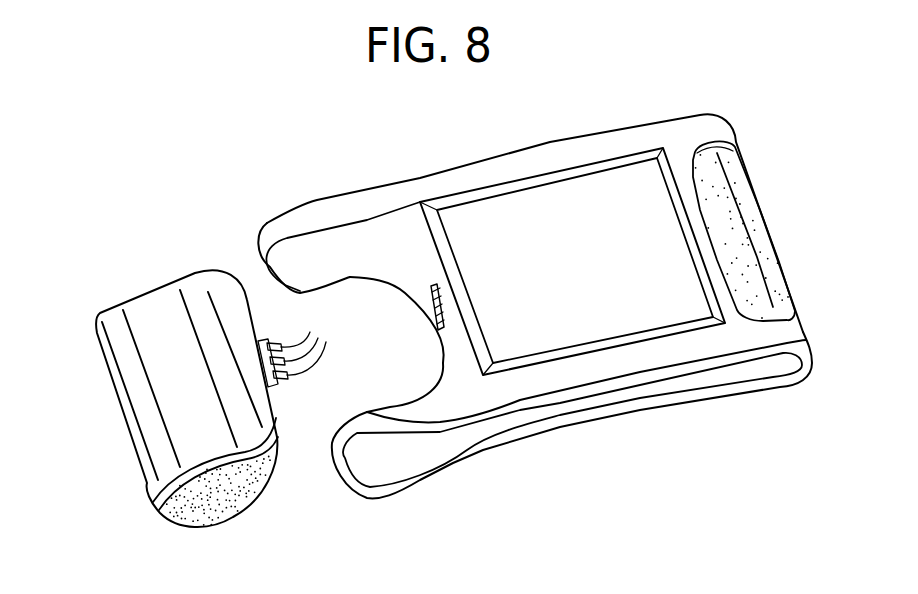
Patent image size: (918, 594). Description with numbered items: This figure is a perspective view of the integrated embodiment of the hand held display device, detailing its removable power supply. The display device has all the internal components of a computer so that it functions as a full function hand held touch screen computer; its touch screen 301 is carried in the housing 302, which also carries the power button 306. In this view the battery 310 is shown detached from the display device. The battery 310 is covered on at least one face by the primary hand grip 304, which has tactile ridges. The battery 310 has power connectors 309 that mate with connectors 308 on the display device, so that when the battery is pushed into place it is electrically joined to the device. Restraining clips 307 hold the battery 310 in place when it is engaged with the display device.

The touch screen 301 is at (612, 190).
The housing 302 is at (707, 128).
The primary hand grip 304 is at (145, 312).
The power button 306 is at (375, 471).
The restraining clips 307 is at (353, 253).
The connectors 308 is at (432, 323).
The power connectors 309 is at (270, 344).
The battery 310 is at (211, 489).